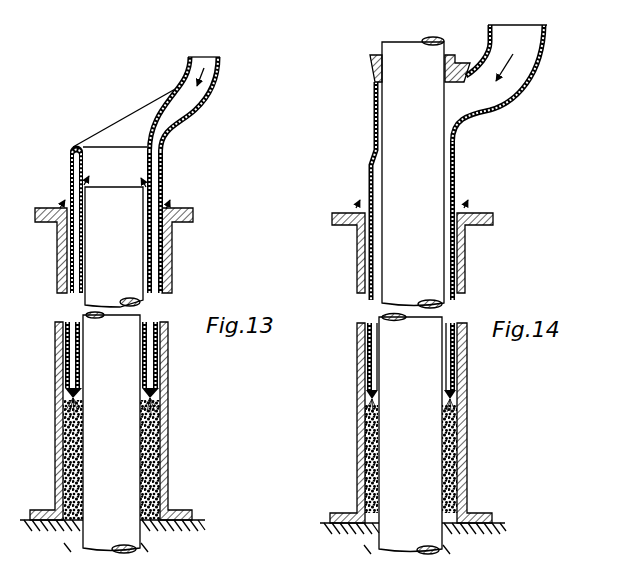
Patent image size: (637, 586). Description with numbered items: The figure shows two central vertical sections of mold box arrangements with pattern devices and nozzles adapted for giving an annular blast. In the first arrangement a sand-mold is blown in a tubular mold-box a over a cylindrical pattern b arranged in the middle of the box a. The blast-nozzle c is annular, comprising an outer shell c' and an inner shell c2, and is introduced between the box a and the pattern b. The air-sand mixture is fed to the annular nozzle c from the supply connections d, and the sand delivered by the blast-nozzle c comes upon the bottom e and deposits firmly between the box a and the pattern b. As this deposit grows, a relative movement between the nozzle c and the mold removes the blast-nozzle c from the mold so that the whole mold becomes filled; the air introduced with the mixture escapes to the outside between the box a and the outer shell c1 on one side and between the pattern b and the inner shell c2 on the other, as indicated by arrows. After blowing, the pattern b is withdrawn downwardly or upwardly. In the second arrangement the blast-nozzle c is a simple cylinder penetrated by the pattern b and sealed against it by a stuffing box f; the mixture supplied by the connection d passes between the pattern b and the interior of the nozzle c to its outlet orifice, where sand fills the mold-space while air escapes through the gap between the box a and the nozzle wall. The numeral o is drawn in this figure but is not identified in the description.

In FIG. 13, the tubular mold-box a is at (58, 417).
In FIG. 13, the cylindrical pattern b is at (113, 370).
In FIG. 14, the cylindrical pattern b is at (411, 295).
In FIG. 13, the blast-nozzle c is at (125, 129).
In FIG. 14, the blast-nozzle c is at (466, 220).
In FIG. 13, the outer shell c' is at (56, 267).
In FIG. 13, the outer shell c1 is at (164, 183).
In FIG. 13, the inner shell c2 is at (79, 271).
In FIG. 13, the supply connection d is at (208, 65).
In FIG. 14, the supply connection d is at (500, 83).
In FIG. 13, the bottom e is at (112, 540).
In FIG. 14, the bottom e is at (413, 542).
In FIG. 14, the stuffing box f is at (367, 81).
In FIG. 14, the casing with packing o is at (468, 424).